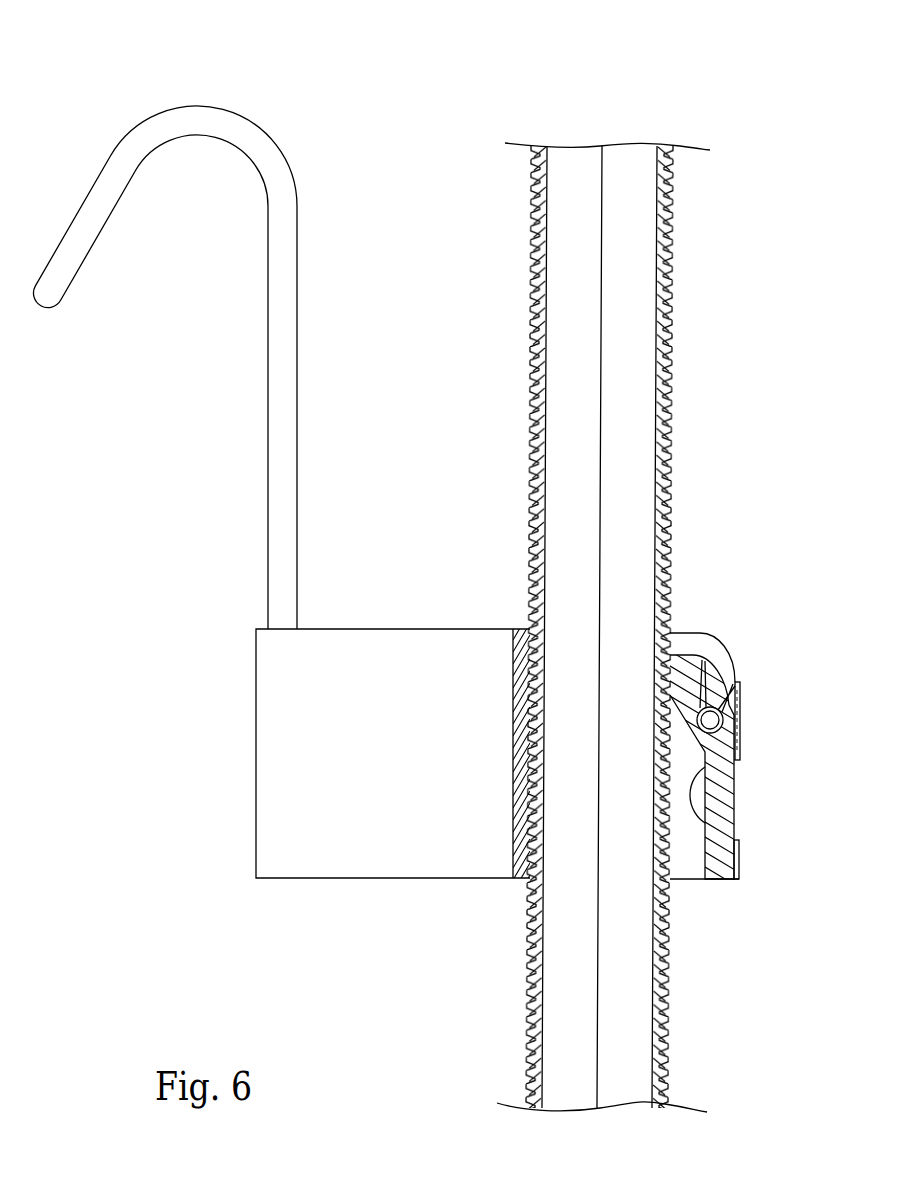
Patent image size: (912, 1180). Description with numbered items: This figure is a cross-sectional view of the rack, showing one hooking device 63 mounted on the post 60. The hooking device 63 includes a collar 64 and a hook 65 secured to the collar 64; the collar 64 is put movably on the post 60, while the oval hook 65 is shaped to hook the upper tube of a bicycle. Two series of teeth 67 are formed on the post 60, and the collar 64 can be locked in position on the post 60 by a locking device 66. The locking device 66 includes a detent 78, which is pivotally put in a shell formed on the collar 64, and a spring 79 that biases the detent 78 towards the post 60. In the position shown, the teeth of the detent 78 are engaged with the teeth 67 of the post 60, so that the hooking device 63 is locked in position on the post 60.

The post 60 is at (619, 627).
The hooking device 63 is at (281, 460).
The collar 64 is at (270, 717).
The hook 65 is at (218, 124).
The locking device 66 is at (722, 868).
The teeth 67 is at (665, 510).
The detent 78 is at (736, 790).
The spring 79 is at (731, 682).